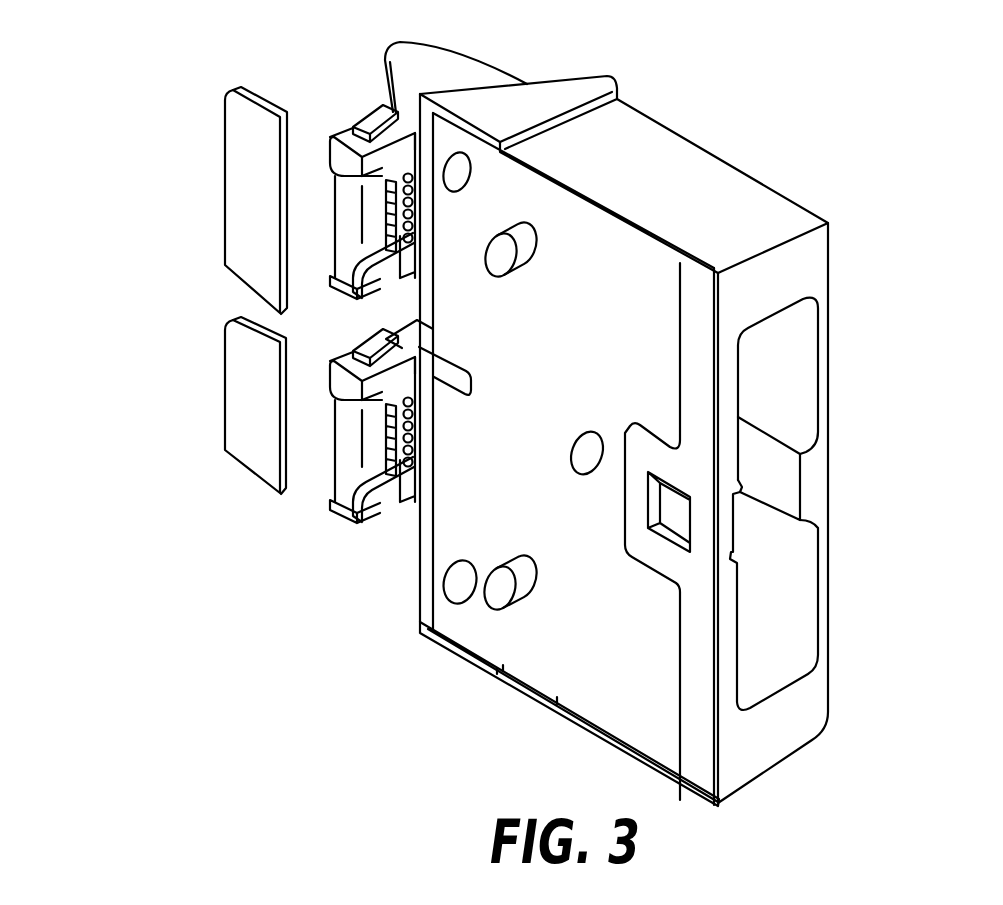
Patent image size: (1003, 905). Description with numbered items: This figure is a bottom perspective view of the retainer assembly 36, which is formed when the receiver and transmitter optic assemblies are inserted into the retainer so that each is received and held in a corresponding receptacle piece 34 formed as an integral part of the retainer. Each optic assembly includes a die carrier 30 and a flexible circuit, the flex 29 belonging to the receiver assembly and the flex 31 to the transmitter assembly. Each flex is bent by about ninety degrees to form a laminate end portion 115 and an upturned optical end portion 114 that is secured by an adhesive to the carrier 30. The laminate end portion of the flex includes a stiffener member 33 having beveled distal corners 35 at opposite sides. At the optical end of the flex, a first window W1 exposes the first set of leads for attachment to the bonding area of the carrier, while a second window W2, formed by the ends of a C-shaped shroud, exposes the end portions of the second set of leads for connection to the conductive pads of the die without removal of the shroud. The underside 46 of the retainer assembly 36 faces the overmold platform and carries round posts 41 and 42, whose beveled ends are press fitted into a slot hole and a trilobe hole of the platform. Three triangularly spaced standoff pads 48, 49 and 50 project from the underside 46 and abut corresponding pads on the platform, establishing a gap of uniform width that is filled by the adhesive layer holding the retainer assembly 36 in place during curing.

The flexible circuit 29 is at (238, 471).
The die carrier 30 is at (384, 329).
The flexible circuit 31 is at (225, 143).
The stiffener member 33 is at (252, 205).
The receptacle piece 34 is at (452, 56).
The beveled distal corner 35 is at (235, 90).
The retainer assembly 36 is at (833, 158).
The round post 41 is at (534, 268).
The round post 42 is at (526, 596).
The underside of retainer assembly 46 is at (613, 686).
The standoff pad 48 is at (466, 176).
The standoff pad 49 is at (590, 432).
The standoff pad 50 is at (461, 562).
The optical end portion 114 is at (389, 178).
The laminate end portion 115 is at (318, 148).
The first window W1 is at (382, 297).
The second window W2 is at (412, 206).